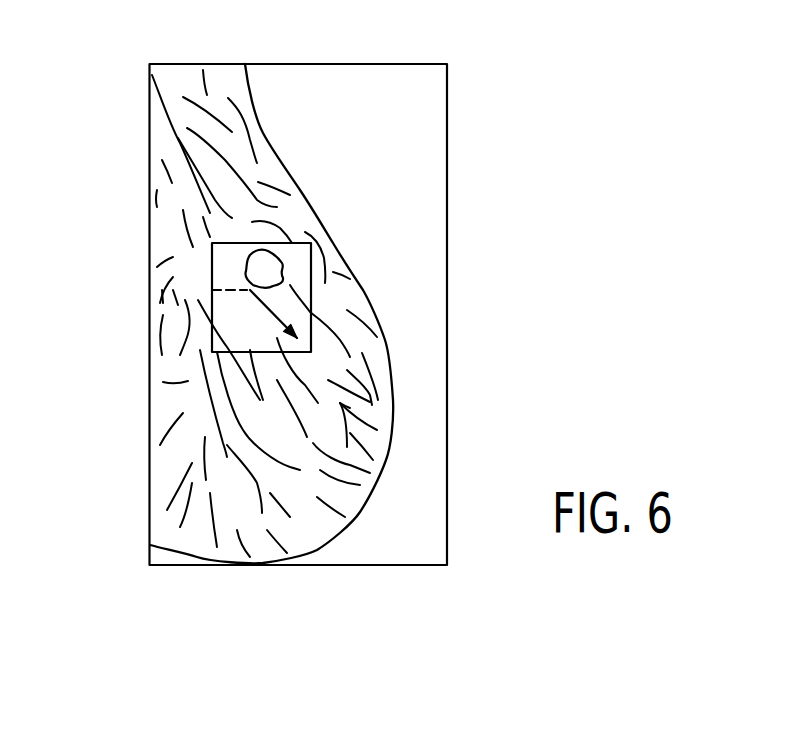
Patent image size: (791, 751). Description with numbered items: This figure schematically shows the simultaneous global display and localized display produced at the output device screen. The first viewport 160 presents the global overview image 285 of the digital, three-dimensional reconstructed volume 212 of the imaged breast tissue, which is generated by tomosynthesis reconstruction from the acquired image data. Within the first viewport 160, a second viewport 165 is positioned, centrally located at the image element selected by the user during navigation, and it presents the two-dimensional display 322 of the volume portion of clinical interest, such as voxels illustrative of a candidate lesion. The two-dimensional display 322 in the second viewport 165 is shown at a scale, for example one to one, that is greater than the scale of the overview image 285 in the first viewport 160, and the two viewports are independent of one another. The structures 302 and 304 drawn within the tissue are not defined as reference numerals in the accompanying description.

The display 160 is at (418, 566).
The region of interest box 165 is at (312, 312).
The breast 212 is at (188, 197).
The breast image 285 is at (270, 107).
The duct structure 302 is at (240, 352).
The tissue structure 304 is at (228, 513).
The lesion 322 is at (288, 272).